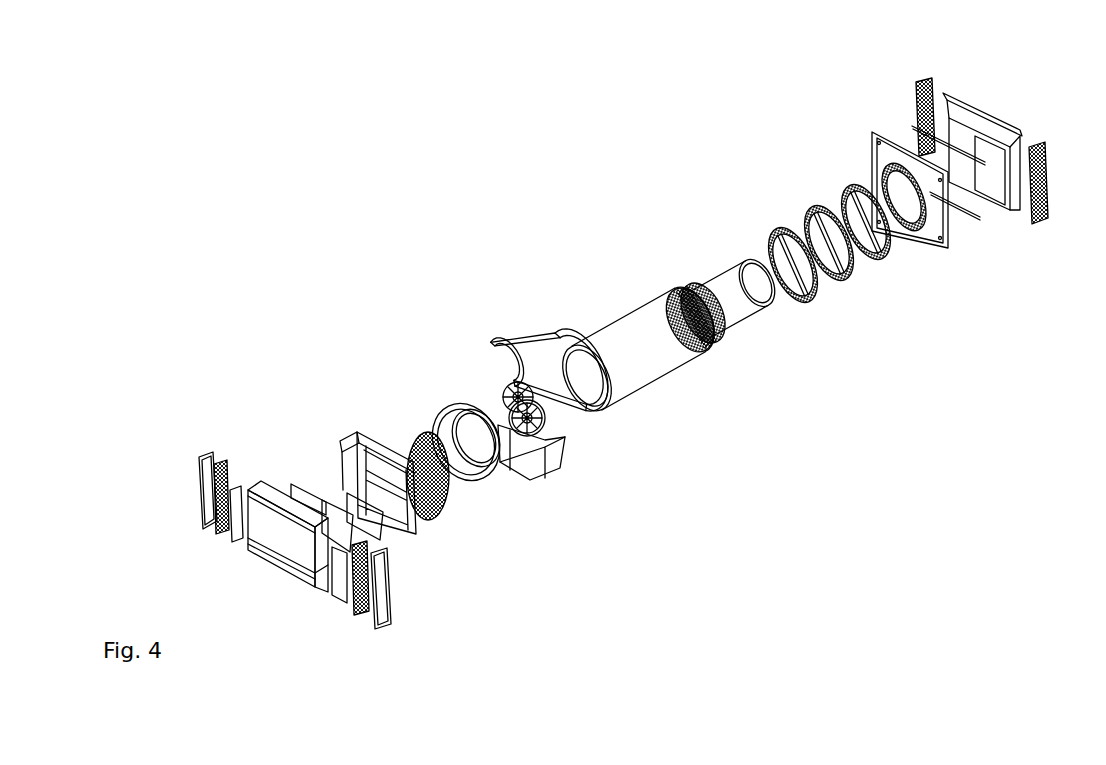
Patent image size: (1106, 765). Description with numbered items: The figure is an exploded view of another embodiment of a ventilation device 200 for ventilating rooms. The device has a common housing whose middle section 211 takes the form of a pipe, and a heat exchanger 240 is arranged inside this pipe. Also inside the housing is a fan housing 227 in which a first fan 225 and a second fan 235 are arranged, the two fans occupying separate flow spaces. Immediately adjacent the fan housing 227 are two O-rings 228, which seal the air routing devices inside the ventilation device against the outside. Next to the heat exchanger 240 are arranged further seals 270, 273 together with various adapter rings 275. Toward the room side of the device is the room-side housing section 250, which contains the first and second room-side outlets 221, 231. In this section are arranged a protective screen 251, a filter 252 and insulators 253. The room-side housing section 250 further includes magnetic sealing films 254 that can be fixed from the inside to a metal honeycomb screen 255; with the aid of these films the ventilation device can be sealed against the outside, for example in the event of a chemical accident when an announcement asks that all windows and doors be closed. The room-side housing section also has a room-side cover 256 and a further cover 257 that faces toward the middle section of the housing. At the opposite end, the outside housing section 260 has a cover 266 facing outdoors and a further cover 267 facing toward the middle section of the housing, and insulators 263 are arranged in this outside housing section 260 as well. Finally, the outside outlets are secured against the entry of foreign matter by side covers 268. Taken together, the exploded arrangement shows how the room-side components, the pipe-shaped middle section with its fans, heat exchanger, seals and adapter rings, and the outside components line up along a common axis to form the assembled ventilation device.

The ventilation device 200 is at (644, 165).
The middle section 211 is at (667, 325).
The first room-side outlet 221 is at (193, 470).
The first fan 225 is at (545, 430).
The fan housing 227 is at (552, 348).
The O-rings 228 is at (472, 402).
The second room-side outlet 231 is at (390, 622).
The second fan 235 is at (552, 448).
The heat exchanger 240 is at (738, 308).
The room-side housing section 250 is at (350, 638).
The protective screen 251 is at (450, 492).
The filter 252 is at (367, 500).
The insulators 253 is at (298, 492).
The magnetic sealing films 254 is at (345, 563).
The metal honeycomb screen 255 is at (369, 568).
The room-side cover 256 is at (295, 537).
The further cover 257 is at (363, 427).
The outside housing section 260 is at (1017, 110).
The insulators 263 is at (971, 157).
The cover 266 is at (983, 120).
The further cover 267 is at (933, 252).
The side covers 268 is at (917, 80).
The seal 270 is at (592, 408).
The seal 273 is at (866, 262).
The adapter rings 275 is at (850, 183).